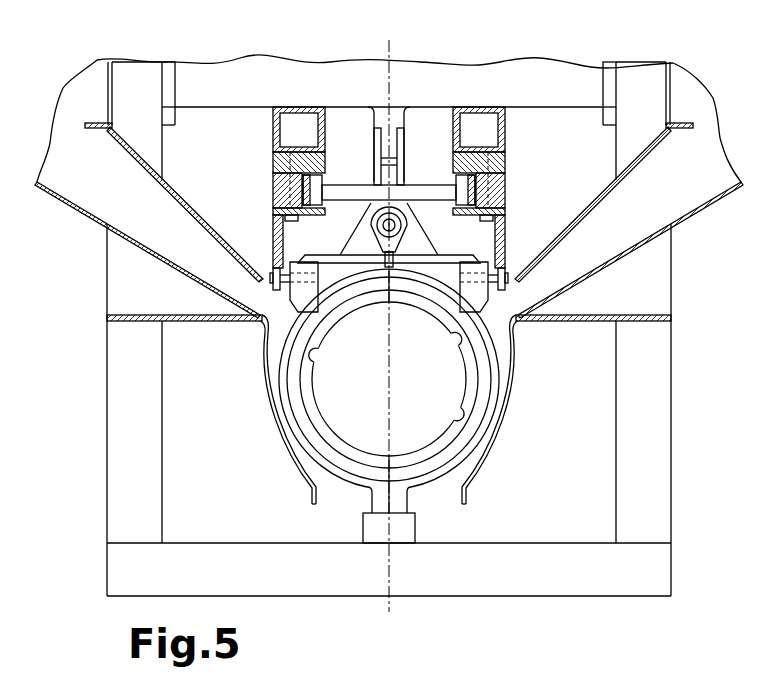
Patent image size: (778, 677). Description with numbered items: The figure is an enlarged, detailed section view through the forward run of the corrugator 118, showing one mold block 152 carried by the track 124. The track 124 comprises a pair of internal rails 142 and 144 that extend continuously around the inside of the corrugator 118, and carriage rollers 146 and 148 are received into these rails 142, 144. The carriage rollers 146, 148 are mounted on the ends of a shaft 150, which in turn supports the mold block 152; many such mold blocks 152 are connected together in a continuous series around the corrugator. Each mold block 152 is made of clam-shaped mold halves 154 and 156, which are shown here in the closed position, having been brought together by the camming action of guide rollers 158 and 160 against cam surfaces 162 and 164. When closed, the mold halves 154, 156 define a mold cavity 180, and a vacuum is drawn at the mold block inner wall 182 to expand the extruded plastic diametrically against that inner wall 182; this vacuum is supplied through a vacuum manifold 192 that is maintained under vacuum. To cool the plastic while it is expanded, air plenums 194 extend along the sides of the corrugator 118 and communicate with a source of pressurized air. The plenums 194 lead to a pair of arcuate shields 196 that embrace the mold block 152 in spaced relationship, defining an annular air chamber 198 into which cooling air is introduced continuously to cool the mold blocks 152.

The corrugator 118 is at (387, 428).
The track 124 is at (270, 154).
The internal rail 142 is at (278, 187).
The internal rail 144 is at (505, 190).
The carriage roller 146 is at (320, 190).
The carriage roller 148 is at (460, 197).
The shaft 150 is at (421, 193).
The mold block 152 is at (298, 413).
The clam-shaped mold half 154 is at (320, 352).
The clam-shaped mold half 156 is at (455, 409).
The guide roller 158 is at (263, 293).
The guide roller 160 is at (535, 303).
The cam surface 162 is at (277, 238).
The cam surface 164 is at (503, 245).
The mold cavity 180 is at (373, 415).
The mold block inner wall 182 is at (454, 343).
The vacuum manifold 192 is at (372, 528).
The air plenum 194 is at (653, 200).
The arcuate shield 196 is at (486, 470).
The annular air chamber 198 is at (497, 440).